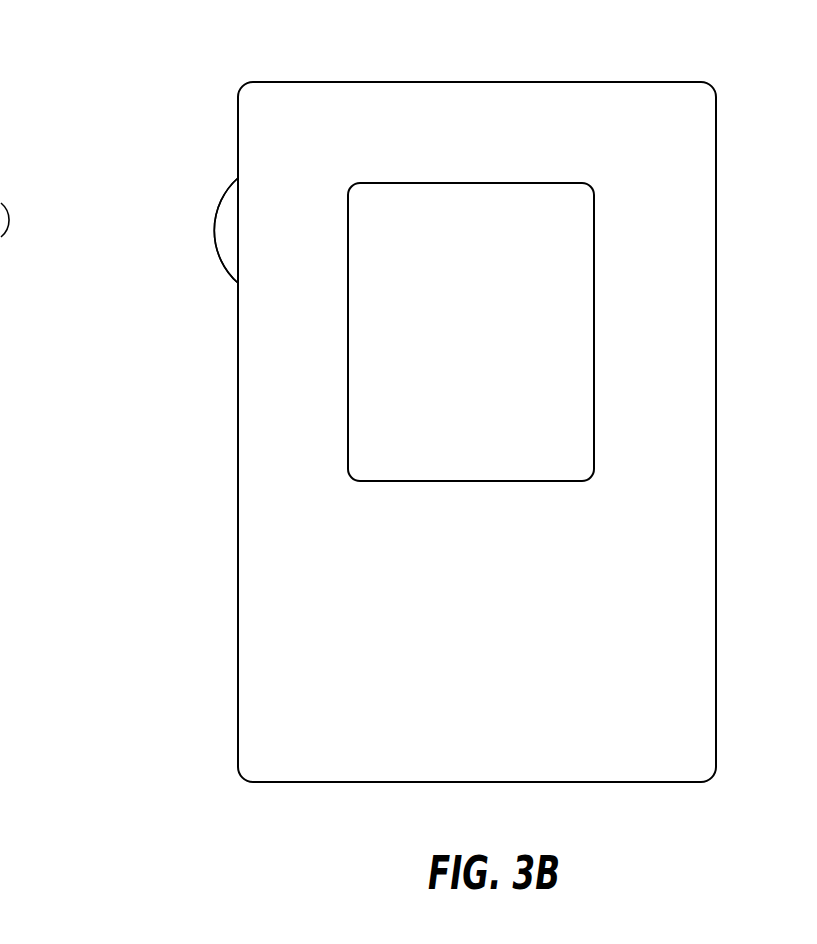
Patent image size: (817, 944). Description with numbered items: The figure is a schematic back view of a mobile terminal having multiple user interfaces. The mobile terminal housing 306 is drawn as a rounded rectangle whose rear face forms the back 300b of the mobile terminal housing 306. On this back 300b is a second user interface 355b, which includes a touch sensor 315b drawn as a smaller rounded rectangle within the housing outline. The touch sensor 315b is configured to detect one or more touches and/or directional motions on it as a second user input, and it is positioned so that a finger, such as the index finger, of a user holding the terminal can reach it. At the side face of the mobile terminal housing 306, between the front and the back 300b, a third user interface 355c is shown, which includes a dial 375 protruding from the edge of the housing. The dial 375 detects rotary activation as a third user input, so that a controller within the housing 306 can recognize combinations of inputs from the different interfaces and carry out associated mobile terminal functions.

The mobile terminal housing 306 is at (337, 82).
The back of the mobile terminal housing 300b is at (477, 405).
The second user interface 355b is at (575, 255).
The touch sensor 315b is at (571, 332).
The third user interface 355c is at (222, 195).
The dial 375 is at (228, 225).